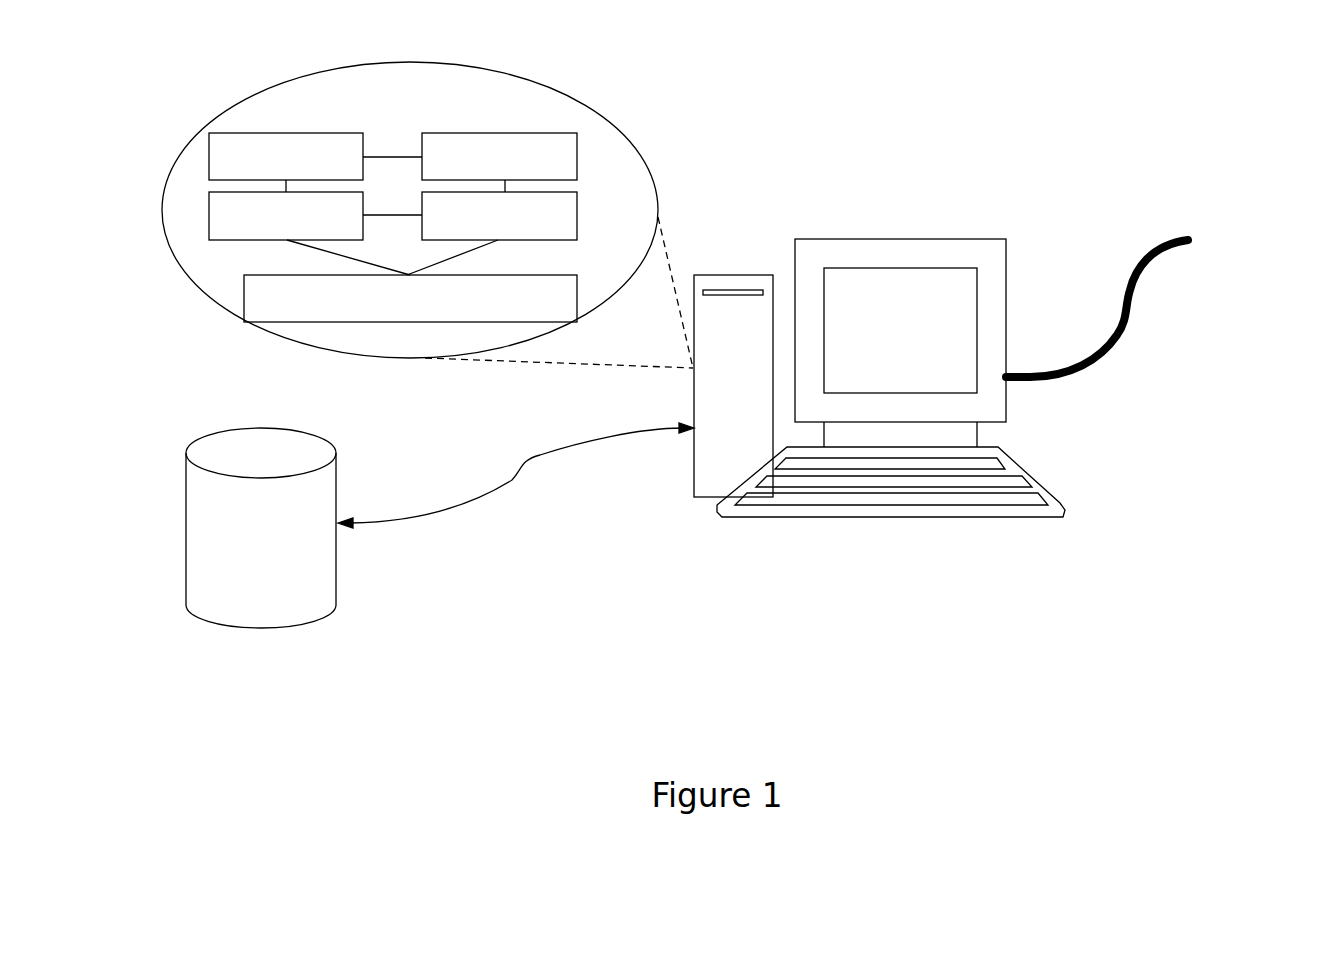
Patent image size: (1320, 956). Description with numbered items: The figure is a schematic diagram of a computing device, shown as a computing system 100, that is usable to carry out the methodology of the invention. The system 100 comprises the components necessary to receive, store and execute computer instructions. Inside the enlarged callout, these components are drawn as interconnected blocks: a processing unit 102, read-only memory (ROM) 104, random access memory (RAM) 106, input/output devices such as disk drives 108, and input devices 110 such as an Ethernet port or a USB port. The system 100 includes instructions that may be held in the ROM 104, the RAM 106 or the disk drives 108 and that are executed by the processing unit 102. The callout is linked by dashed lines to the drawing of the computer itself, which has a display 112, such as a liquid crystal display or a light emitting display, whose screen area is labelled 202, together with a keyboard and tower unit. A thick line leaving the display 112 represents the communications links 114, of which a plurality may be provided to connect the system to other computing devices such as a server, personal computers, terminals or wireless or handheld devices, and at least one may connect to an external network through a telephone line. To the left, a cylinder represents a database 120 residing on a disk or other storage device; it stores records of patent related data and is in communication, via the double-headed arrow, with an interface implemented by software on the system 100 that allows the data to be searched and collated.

The computing system 100 is at (908, 527).
The processing unit 102 is at (410, 298).
The read-only memory (ROM) 104 is at (286, 156).
The random access memory (RAM) 106 is at (499, 156).
The disk drives 108 is at (499, 216).
The input devices 110 is at (286, 216).
The display 112 is at (883, 233).
The communications links 114 is at (1126, 299).
The database 120 is at (261, 528).
The display screen 202 is at (900, 330).